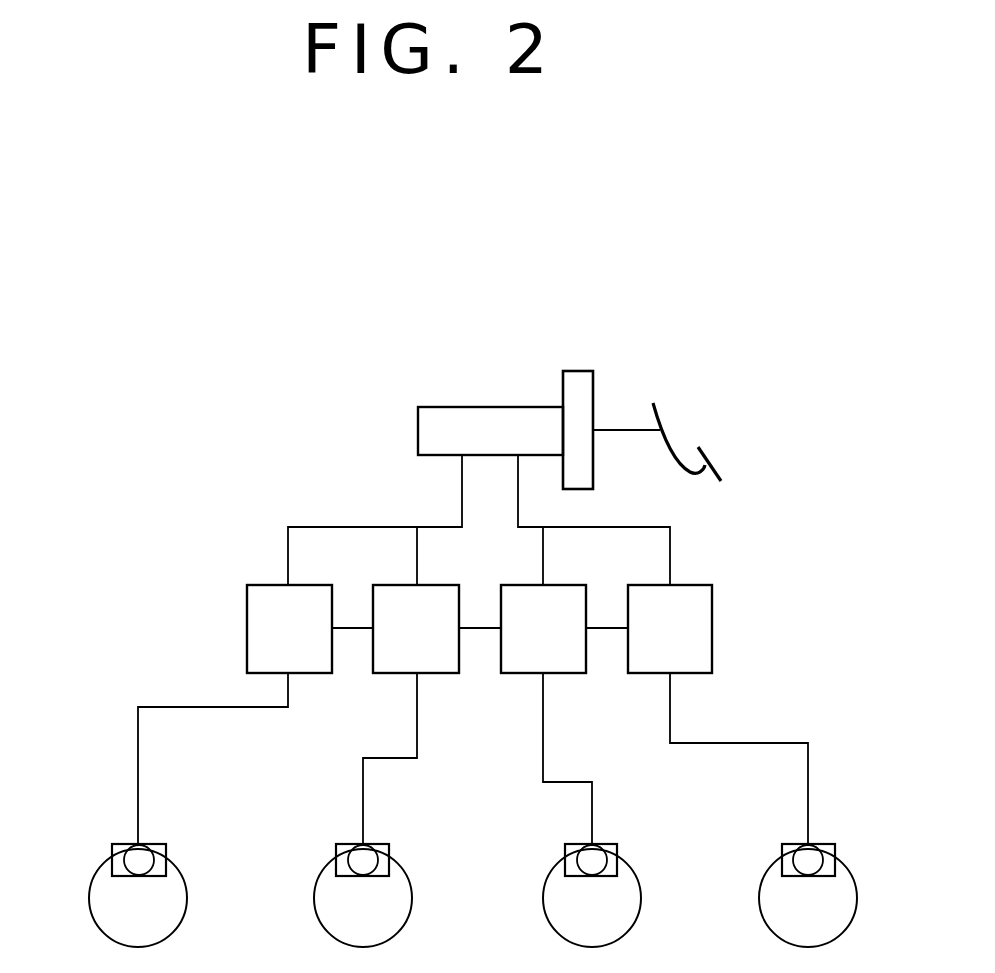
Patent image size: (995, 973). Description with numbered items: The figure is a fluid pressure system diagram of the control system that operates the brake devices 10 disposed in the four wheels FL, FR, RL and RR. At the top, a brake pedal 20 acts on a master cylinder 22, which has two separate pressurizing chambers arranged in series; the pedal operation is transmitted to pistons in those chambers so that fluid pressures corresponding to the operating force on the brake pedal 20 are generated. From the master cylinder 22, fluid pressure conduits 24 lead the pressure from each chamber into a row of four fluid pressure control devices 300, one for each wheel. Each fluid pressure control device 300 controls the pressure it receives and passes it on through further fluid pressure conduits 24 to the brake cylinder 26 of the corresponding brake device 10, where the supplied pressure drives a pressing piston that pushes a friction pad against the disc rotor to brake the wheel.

The brake device 10 is at (111, 821).
The brake pedal 20 is at (739, 449).
The master cylinder 22 is at (477, 407).
The fluid pressure conduit 24 is at (338, 526).
The brake cylinder 26 is at (155, 843).
The fluid pressure control device 300 is at (479, 629).